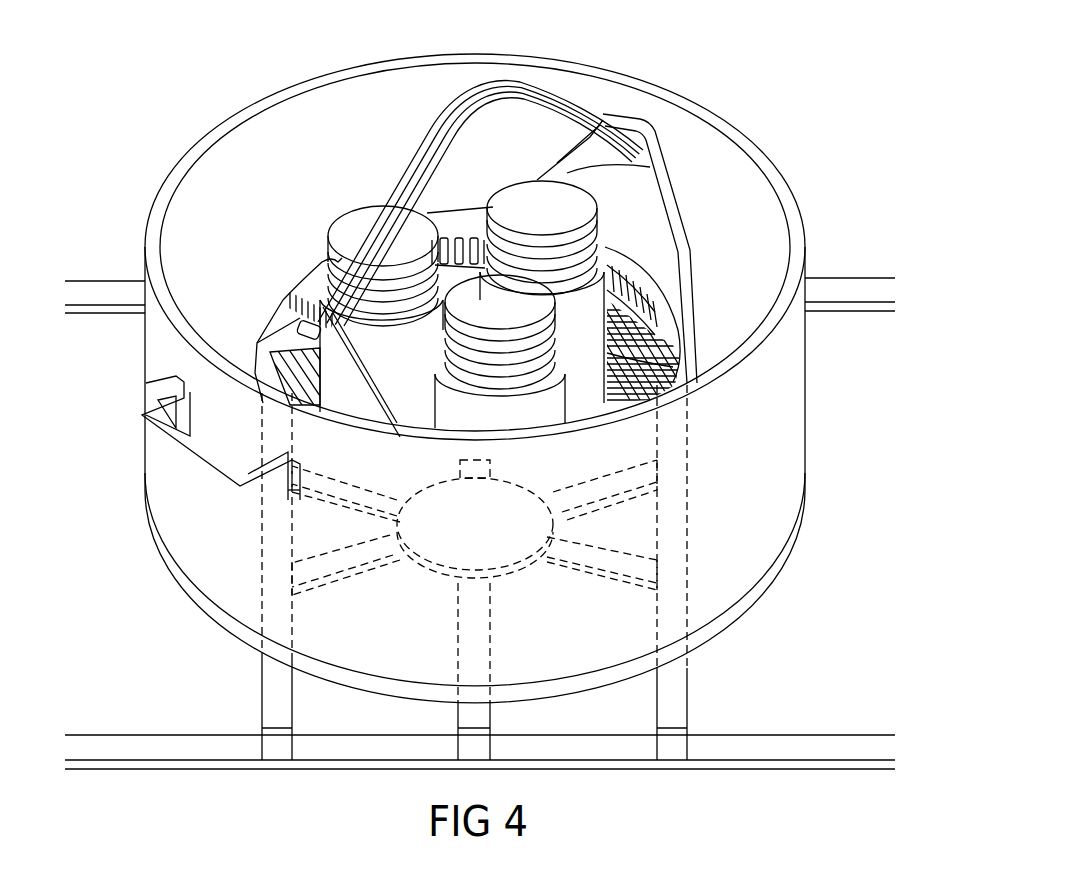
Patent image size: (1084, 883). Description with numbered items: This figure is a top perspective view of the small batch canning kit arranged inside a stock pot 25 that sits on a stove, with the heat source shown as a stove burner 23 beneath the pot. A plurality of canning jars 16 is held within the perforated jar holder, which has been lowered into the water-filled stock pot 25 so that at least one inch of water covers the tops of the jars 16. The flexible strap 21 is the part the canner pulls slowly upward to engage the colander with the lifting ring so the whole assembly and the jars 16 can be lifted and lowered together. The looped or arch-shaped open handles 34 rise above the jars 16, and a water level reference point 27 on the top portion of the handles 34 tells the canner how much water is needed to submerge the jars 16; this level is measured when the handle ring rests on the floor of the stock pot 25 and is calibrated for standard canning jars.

The canning jars 16 is at (307, 288).
The flexible strap 21 is at (475, 100).
The stove burner 23 is at (440, 548).
The stock pot 25 is at (732, 128).
The water level reference point 27 is at (562, 167).
The looped or arch-shaped open handles 34 is at (685, 302).